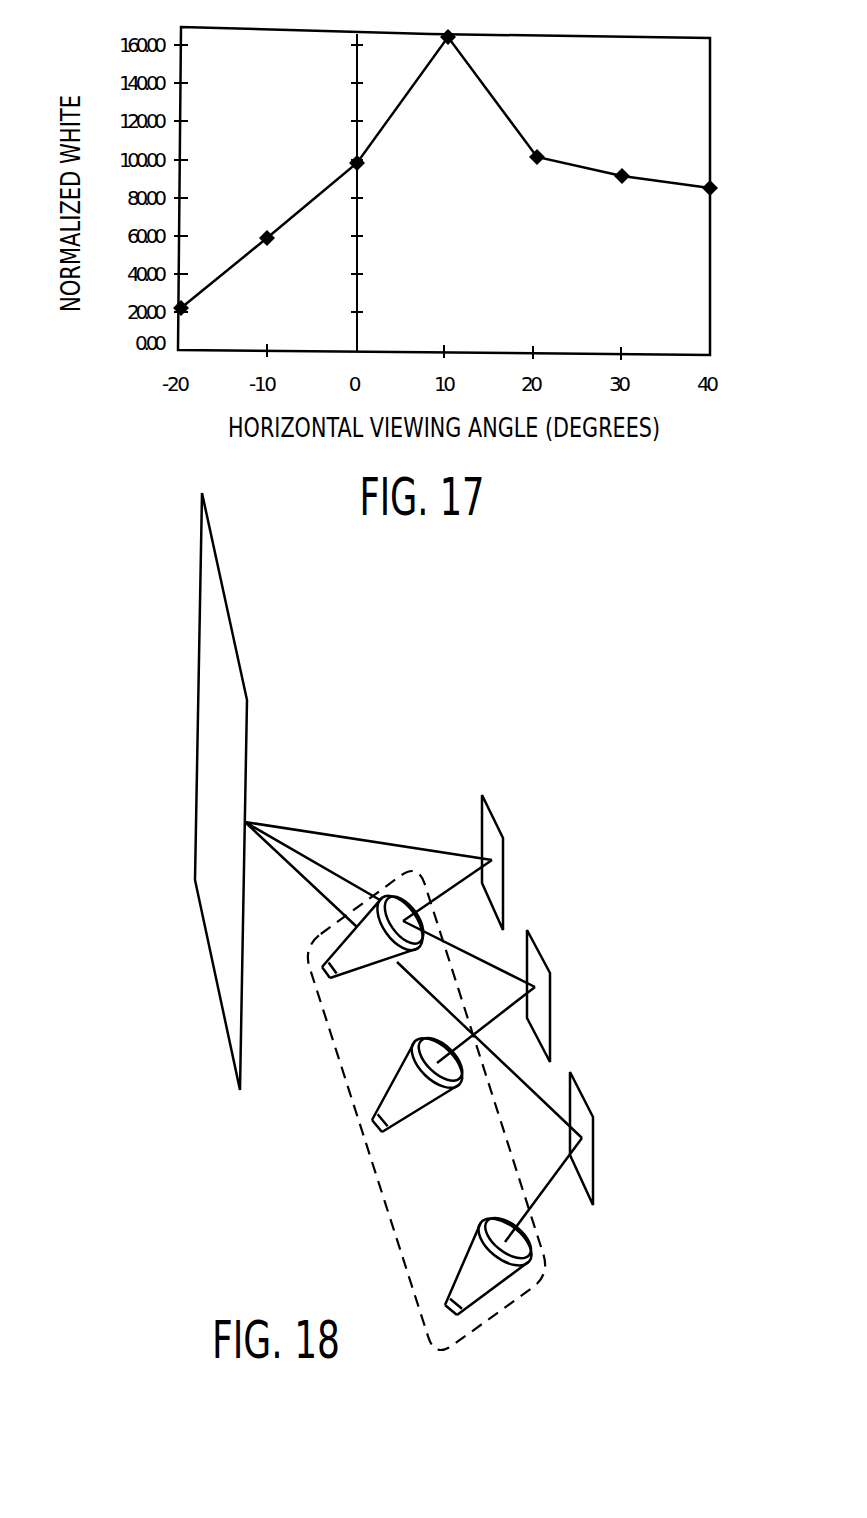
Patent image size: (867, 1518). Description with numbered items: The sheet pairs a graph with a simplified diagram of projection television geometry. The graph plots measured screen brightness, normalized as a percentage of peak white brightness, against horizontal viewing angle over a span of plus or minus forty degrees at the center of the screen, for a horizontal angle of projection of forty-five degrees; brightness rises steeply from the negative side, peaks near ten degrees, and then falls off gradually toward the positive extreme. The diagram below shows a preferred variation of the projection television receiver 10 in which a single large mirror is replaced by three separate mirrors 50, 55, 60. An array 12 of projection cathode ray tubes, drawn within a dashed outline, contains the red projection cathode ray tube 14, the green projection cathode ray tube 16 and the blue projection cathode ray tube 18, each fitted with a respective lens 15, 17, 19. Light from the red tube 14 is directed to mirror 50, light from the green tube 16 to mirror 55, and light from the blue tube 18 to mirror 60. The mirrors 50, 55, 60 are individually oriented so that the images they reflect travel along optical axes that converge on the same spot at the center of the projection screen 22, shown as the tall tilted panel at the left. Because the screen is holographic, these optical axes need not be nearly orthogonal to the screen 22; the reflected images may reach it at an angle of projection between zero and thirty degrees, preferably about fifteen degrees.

The projection television receiver 10 is at (387, 713).
The array of projection cathode ray tubes 12 is at (444, 1190).
The red projection cathode ray tube 14 is at (377, 963).
The lens 15 is at (423, 947).
The green projection cathode ray tube 16 is at (415, 1107).
The lens 17 is at (465, 1080).
The blue projection cathode ray tube 18 is at (467, 1245).
The lens 19 is at (530, 1255).
The projection screen 22 is at (228, 1013).
The mirror 50 is at (490, 823).
The mirror 55 is at (537, 960).
The mirror 60 is at (580, 1102).